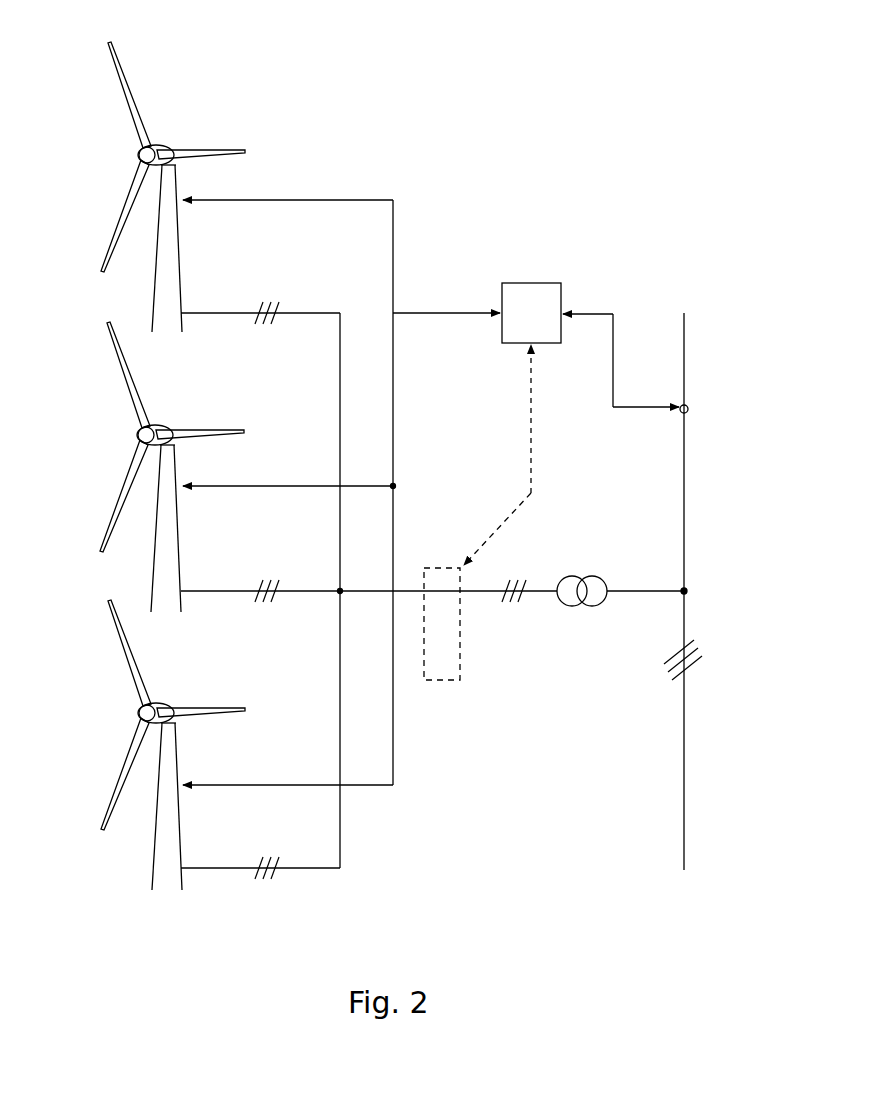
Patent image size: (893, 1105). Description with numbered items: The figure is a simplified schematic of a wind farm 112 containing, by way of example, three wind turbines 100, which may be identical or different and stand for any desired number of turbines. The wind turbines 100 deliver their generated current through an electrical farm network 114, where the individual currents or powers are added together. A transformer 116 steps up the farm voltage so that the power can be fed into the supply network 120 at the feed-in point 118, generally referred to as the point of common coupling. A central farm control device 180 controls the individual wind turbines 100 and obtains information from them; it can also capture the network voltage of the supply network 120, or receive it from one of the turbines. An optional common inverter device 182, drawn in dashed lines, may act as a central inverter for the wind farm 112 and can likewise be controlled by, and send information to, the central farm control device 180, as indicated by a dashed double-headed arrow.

The wind turbine 100 is at (175, 257).
The wind farm 112 is at (461, 204).
The electrical farm network 114 is at (400, 588).
The transformer 116 is at (586, 560).
The feed-in point 118 is at (697, 568).
The supply network 120 is at (686, 340).
The central farm control device 180 is at (548, 287).
The common inverter device 182 is at (447, 657).